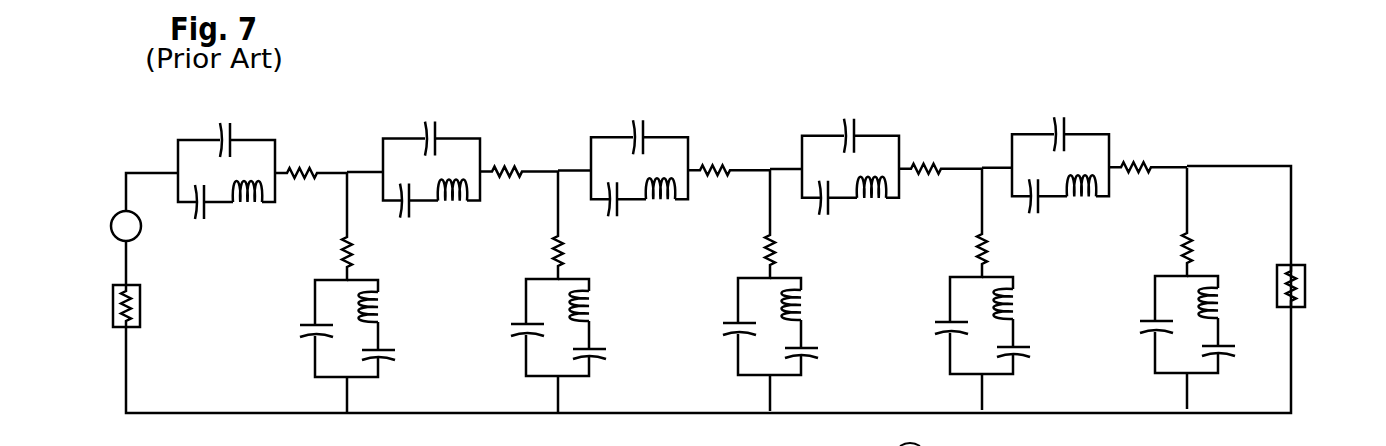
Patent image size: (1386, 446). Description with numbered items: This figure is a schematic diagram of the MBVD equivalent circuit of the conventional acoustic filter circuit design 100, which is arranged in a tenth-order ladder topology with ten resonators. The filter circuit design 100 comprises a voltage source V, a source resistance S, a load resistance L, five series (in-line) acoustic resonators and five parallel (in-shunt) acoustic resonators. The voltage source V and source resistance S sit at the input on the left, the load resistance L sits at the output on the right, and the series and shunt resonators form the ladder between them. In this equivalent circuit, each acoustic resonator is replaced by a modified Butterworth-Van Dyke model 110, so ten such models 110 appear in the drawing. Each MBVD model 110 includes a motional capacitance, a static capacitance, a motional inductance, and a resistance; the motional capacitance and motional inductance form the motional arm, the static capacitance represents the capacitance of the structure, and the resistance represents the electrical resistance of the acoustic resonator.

The filter circuit design 100 is at (361, 50).
The modified Butterworth-Van Dyke (MBVD) model 110 is at (307, 298).
The voltage source V is at (118, 226).
The source resistance S is at (118, 306).
The load resistance L is at (1301, 286).